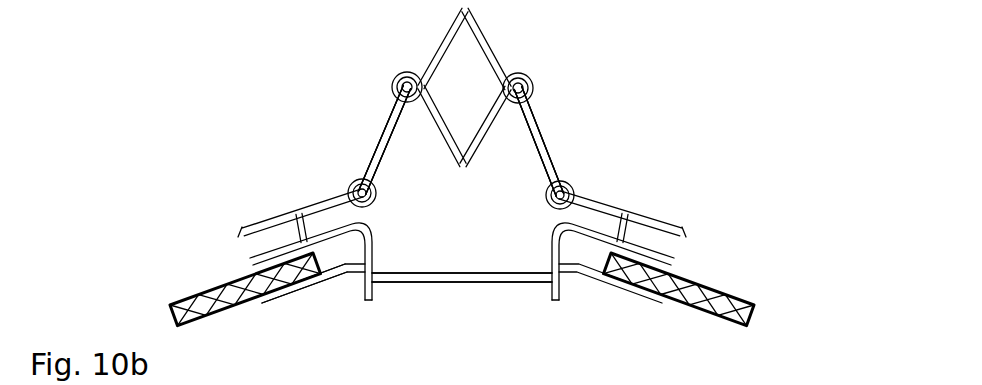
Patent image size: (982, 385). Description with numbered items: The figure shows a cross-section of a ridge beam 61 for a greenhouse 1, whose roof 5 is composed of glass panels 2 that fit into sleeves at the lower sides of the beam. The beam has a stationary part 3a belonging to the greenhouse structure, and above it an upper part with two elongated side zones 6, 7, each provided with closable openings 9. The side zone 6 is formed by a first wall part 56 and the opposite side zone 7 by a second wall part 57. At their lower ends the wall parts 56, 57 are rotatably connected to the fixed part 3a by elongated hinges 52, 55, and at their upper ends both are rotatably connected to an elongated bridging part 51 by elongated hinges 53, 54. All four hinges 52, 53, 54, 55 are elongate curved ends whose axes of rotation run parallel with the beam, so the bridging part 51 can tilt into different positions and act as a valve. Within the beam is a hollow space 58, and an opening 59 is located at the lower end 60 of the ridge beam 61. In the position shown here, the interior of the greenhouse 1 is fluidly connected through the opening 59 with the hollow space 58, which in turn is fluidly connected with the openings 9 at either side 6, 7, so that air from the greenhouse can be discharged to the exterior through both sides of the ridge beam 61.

The greenhouse 1 is at (213, 310).
The glass panels 2 is at (233, 290).
The stationary part 3a is at (342, 272).
The roof 5 is at (197, 295).
The elongated side zone 6 is at (393, 115).
The elongated side zone 7 is at (535, 118).
The closable openings 9 is at (382, 138).
The bridging part 51 is at (442, 50).
The elongated hinge 52 is at (350, 178).
The elongated hinge 53 is at (395, 80).
The elongated hinge 54 is at (533, 78).
The elongated hinge 55 is at (577, 187).
The first wall part 56 is at (377, 152).
The second wall part 57 is at (553, 165).
The hollow space 58 is at (442, 192).
The opening 59 is at (437, 279).
The lower end 60 is at (510, 282).
The ridge beam 61 is at (682, 223).